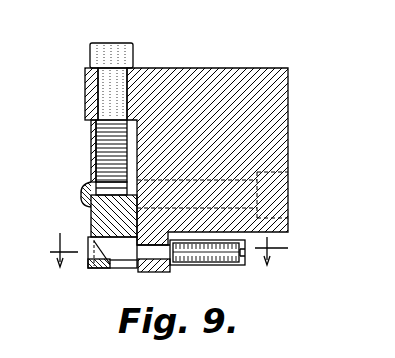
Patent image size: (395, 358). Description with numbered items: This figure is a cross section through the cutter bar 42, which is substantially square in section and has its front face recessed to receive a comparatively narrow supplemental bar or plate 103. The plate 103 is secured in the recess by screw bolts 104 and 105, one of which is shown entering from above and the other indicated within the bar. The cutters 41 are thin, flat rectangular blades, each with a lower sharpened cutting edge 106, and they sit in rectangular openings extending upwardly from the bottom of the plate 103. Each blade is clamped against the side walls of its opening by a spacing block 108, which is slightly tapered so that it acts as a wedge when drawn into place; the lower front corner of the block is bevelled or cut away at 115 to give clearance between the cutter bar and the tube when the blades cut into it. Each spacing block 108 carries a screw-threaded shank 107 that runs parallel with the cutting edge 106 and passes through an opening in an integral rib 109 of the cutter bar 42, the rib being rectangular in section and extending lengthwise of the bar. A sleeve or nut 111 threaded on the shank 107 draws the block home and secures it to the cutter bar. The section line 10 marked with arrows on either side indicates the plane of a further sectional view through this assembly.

The cutter bar 42 is at (288, 108).
The supplemental bar or plate 103 is at (91, 148).
The screw bolt 104 is at (123, 47).
The screw bolt 105 is at (290, 176).
The cutter 41 is at (88, 257).
The bevel of spacing block 115 is at (108, 253).
The cutting edge 106 is at (96, 267).
The spacing block 108 is at (128, 261).
The integral rib 109 is at (141, 268).
The screw-threaded shank 107 is at (167, 262).
The sleeve or nut 111 is at (238, 265).
The section line 10- 10 is at (165, 252).